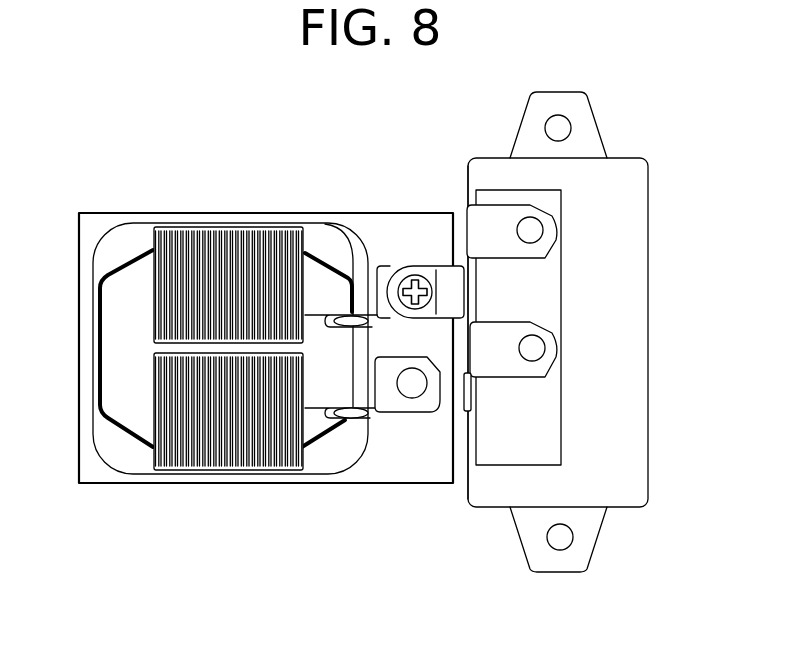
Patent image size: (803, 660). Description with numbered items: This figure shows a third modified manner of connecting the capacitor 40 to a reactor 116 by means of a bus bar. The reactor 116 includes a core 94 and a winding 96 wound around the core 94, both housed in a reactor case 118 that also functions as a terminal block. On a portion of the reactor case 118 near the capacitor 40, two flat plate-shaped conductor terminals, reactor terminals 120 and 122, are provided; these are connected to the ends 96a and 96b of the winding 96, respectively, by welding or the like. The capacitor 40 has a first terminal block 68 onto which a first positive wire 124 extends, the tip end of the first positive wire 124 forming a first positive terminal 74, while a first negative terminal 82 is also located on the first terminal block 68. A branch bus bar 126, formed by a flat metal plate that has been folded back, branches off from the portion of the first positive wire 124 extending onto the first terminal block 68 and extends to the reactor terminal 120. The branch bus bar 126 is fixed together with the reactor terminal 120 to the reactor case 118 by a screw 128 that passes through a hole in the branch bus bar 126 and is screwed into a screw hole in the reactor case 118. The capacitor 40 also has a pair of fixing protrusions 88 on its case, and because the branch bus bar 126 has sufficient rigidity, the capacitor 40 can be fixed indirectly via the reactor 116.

The capacitor 40 is at (632, 230).
The first terminal block 68 is at (517, 447).
The first positive terminal 74 is at (478, 473).
The first negative terminal 82 is at (493, 215).
The fixing protrusions 88 is at (590, 128).
The core 94 is at (120, 331).
The winding 96 is at (213, 224).
The end of the winding 96a is at (337, 262).
The end of the winding 96b is at (322, 432).
The reactor 116 is at (136, 189).
The reactor case 118 is at (363, 250).
The reactor terminal 120 is at (386, 268).
The reactor terminal 122 is at (395, 400).
The first positive wire 124 is at (468, 362).
The branch bus bar 126 is at (443, 278).
The screw 128 is at (413, 275).